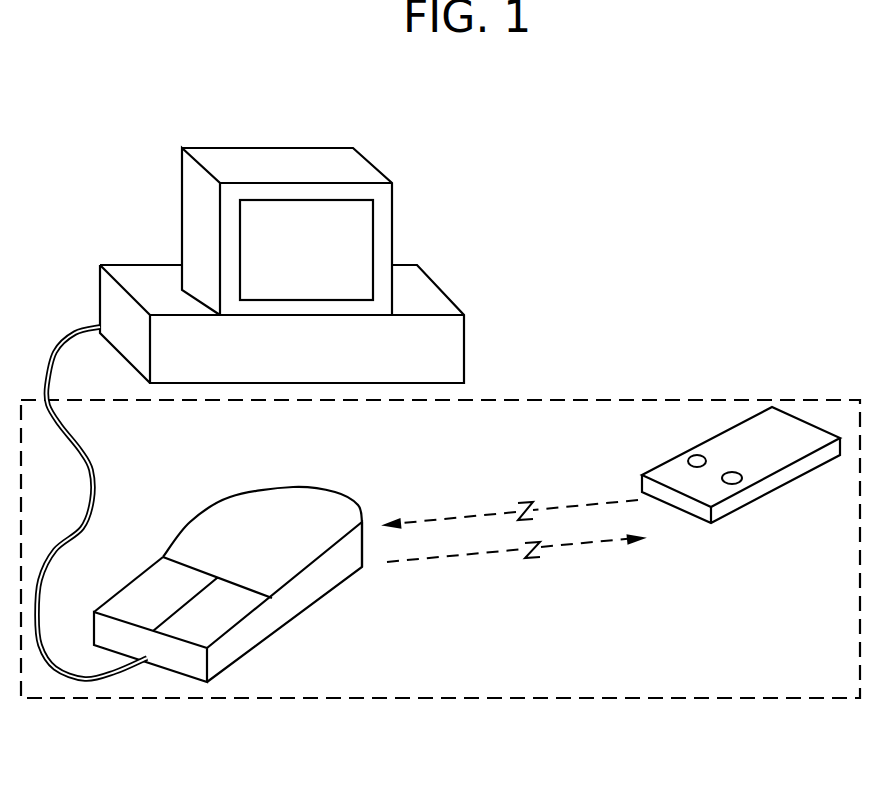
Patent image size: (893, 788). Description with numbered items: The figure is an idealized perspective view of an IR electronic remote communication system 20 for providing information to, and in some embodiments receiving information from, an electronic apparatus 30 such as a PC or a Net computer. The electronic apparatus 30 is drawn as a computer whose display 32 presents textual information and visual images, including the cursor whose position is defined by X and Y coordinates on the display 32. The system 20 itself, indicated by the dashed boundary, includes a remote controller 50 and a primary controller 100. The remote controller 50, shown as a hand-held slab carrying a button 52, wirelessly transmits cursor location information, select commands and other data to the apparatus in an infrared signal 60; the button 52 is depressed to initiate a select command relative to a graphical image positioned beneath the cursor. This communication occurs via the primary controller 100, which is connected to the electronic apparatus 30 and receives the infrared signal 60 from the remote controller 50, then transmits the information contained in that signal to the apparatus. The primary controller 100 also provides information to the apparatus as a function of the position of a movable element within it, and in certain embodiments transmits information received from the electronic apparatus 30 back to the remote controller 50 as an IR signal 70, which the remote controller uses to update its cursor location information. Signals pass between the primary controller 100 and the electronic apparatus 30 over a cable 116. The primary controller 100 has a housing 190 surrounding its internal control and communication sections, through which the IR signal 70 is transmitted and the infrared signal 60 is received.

The IR electronic remote communication system 20 is at (529, 400).
The electronic apparatus 30 is at (120, 308).
The display 32 is at (228, 230).
The remote controller 50 is at (747, 507).
The button 52 is at (688, 458).
The infrared signal 60 is at (450, 515).
The IR signal 70 is at (573, 550).
The primary controller 100 is at (272, 637).
The cable 116 is at (87, 433).
The housing 190 is at (362, 567).